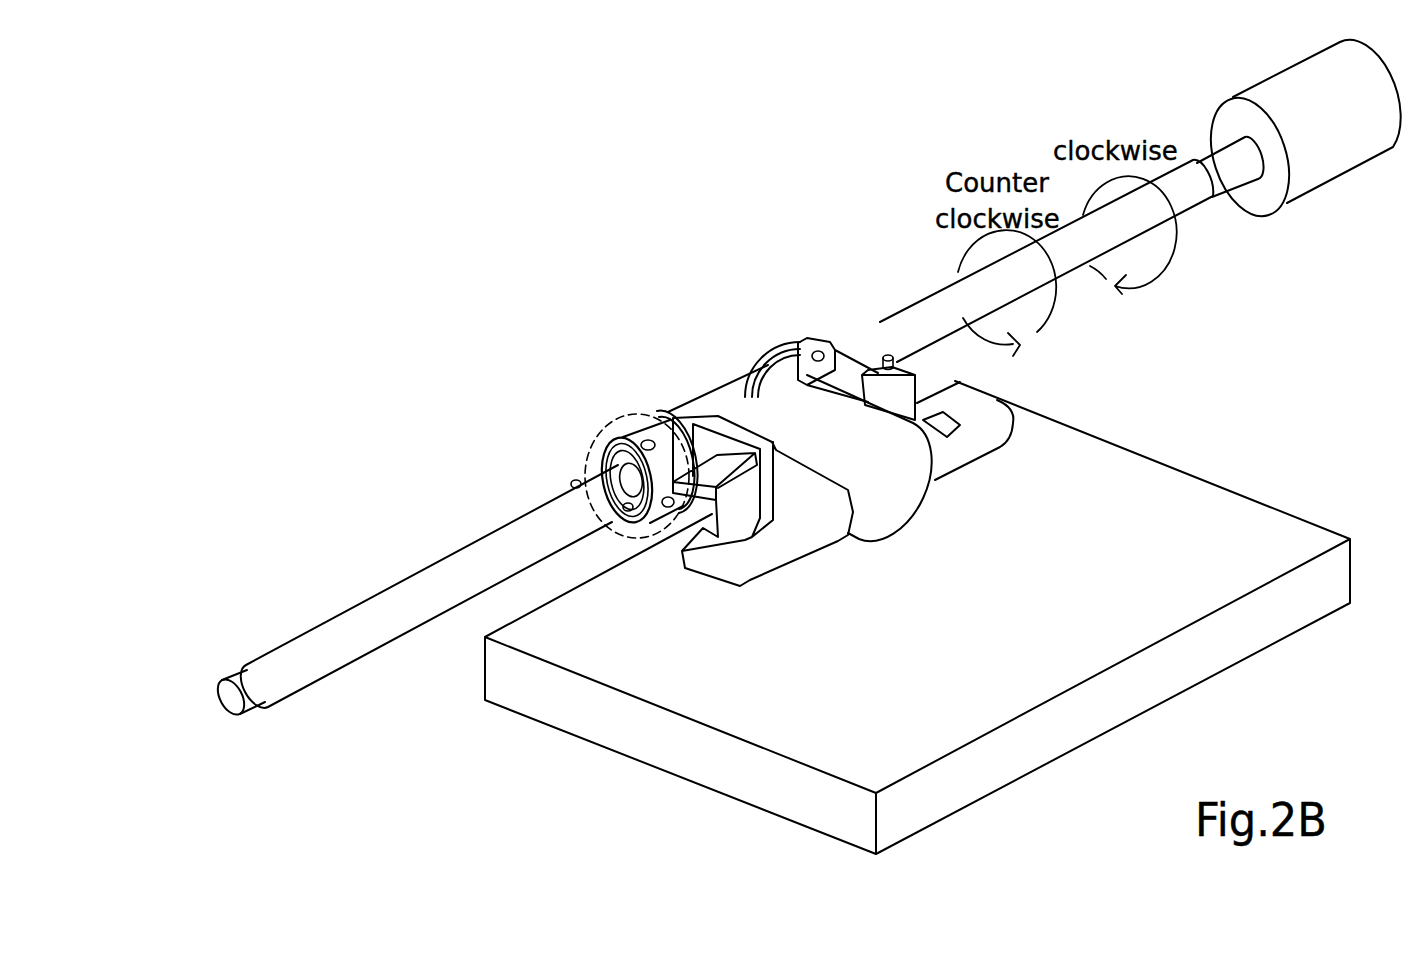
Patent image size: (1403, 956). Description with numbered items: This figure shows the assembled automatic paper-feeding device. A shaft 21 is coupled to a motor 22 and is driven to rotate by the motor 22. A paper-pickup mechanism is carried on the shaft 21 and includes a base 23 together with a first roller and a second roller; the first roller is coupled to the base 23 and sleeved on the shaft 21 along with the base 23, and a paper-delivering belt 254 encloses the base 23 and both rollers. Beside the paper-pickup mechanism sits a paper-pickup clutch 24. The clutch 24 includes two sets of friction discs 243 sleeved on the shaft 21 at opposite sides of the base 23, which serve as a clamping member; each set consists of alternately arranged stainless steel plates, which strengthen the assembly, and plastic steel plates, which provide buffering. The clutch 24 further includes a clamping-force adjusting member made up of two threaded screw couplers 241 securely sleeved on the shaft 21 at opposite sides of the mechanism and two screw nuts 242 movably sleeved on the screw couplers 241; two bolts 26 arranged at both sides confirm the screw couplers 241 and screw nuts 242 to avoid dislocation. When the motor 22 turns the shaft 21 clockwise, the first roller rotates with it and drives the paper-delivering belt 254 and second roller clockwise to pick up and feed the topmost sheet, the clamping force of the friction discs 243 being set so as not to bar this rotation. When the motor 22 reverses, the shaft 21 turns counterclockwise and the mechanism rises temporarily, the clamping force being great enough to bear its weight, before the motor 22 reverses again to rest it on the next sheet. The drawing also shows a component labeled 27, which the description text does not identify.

The shaft 21 is at (390, 605).
The motor 22 is at (1282, 80).
The base 23 is at (780, 548).
The paper-pickup clutch 24 is at (676, 525).
The screw couplers 241 is at (618, 430).
The screw nuts 242 is at (645, 425).
The friction discs 243 is at (662, 425).
The paper-delivering belt 254 is at (880, 497).
The bolts 26 is at (576, 481).
The base 27 is at (1173, 483).